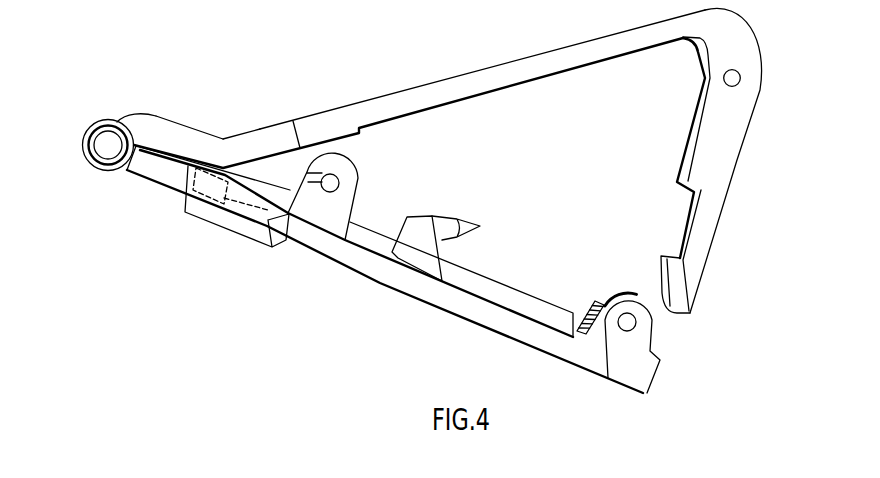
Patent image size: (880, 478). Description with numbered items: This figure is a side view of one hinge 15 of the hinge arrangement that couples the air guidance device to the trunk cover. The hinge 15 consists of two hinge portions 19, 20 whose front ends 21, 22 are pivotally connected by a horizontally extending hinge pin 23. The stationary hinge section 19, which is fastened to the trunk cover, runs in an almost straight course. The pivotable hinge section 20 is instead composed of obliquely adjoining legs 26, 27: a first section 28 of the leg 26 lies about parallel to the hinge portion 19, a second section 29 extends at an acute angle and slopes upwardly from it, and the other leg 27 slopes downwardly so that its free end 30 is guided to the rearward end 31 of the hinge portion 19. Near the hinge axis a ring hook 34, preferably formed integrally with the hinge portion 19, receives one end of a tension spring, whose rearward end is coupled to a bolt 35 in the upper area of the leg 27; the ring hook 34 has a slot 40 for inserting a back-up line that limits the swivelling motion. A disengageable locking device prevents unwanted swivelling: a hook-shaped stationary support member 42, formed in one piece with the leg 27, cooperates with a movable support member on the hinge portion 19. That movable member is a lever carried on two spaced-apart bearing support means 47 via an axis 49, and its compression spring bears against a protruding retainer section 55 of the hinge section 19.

The hinge 15 is at (112, 178).
The stationary hinge section 19 is at (396, 296).
The pivotable hinge section 20 is at (407, 87).
The end of hinge portion 21 is at (127, 115).
The end of hinge portion 22 is at (134, 178).
The hinge pin 23 is at (107, 141).
The leg 26 is at (226, 128).
The leg 27 is at (737, 183).
The first section of leg 28 is at (176, 136).
The second section of leg 29 is at (482, 80).
The free end of leg 30 is at (691, 316).
The rearward end of hinge portion 31 is at (659, 367).
The ring hook 34 is at (352, 183).
The bolt 35 is at (738, 74).
The slot 40 is at (305, 173).
The hook-shaped support member 42 is at (684, 273).
The bearing support means 47 is at (604, 290).
The axis 49 is at (628, 320).
The retainer section 55 is at (462, 211).